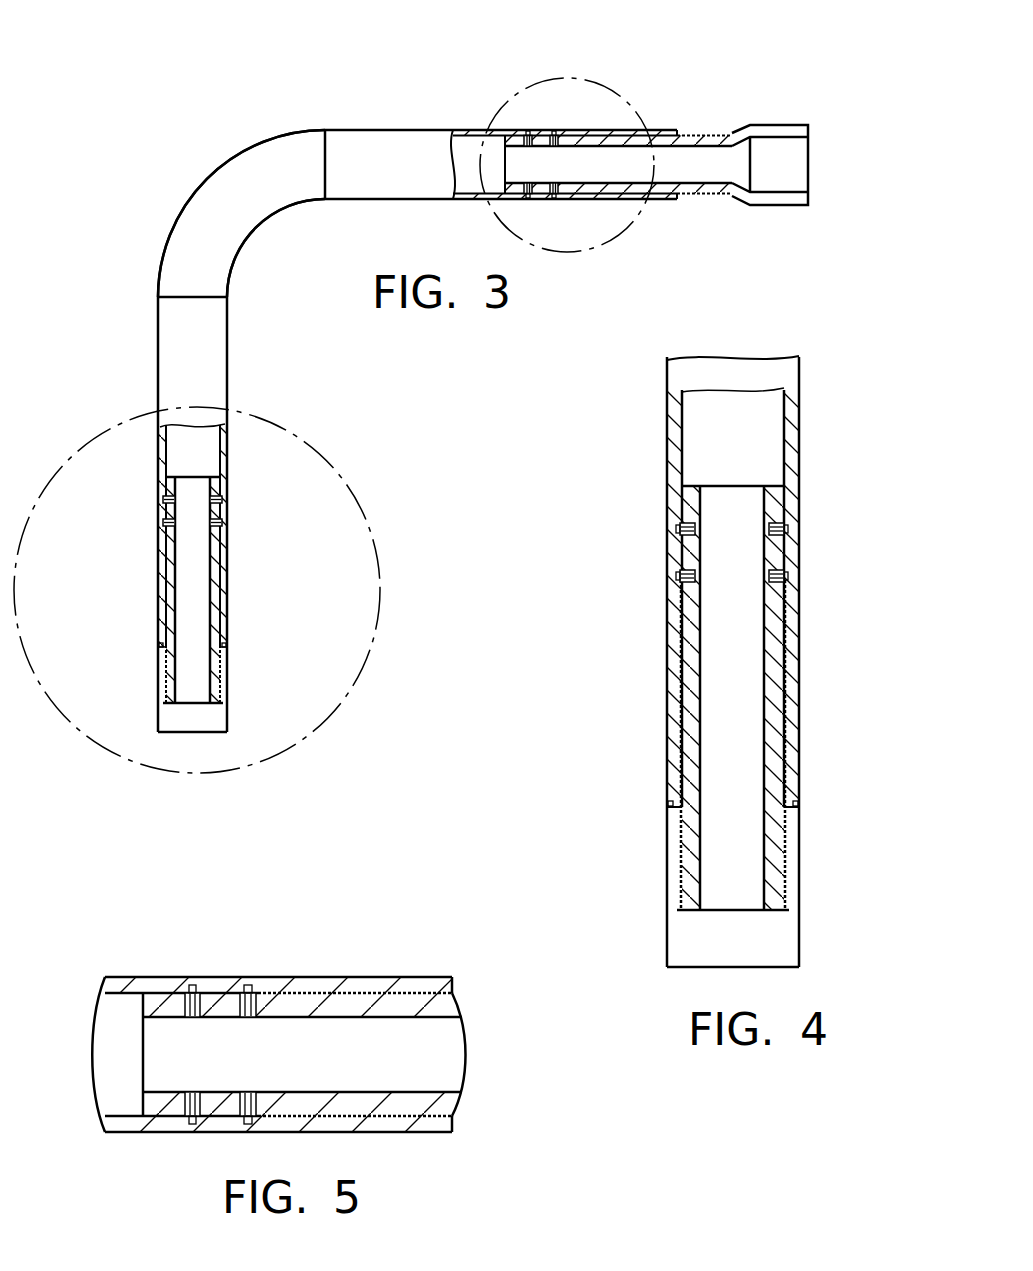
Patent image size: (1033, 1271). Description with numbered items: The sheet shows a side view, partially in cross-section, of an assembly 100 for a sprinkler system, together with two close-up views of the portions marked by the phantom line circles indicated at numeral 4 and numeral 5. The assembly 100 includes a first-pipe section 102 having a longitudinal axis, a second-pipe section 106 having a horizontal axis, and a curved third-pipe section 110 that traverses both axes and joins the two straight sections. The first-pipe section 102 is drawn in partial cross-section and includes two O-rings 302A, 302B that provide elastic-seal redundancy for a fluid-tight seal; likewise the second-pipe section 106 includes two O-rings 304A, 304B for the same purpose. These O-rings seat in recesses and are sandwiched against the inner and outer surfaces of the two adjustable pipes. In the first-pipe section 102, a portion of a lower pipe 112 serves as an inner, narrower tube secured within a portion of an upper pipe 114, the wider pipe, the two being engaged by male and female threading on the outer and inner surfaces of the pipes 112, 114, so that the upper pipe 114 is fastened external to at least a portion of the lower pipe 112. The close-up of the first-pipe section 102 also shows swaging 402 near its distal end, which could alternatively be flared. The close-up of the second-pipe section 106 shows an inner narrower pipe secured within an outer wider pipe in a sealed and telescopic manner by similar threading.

In FIG. 3, the assembly 100 is at (292, 257).
In FIG. 3, the first-pipe section 102 is at (230, 381).
In FIG. 3, the second-pipe section 106 is at (395, 199).
In FIG. 3, the third-pipe section 110 is at (200, 178).
In FIG. 3, the lower pipe 112 is at (215, 660).
In FIG. 4, the lower pipe 112 is at (683, 868).
In FIG. 5, the lower pipe 112 is at (304, 1054).
In FIG. 3, the upper pipe 114 is at (228, 595).
In FIG. 4, the upper pipe 114 is at (793, 708).
In FIG. 5, the upper pipe 114 is at (272, 1054).
In FIG. 3, the O-ring 302A is at (223, 500).
In FIG. 4, the O-ring 302A is at (792, 528).
In FIG. 3, the O-ring 302B is at (223, 522).
In FIG. 4, the O-ring 302B is at (792, 575).
In FIG. 3, the O-ring 304A is at (528, 196).
In FIG. 5, the O-ring 304A is at (193, 985).
In FIG. 3, the O-ring 304B is at (553, 196).
In FIG. 5, the O-ring 304B is at (248, 985).
In FIG. 4, the swaging 402 is at (828, 798).
In FIG. 3, the phantom line circle 4 is at (380, 560).
In FIG. 3, the phantom line circle 5 is at (565, 77).